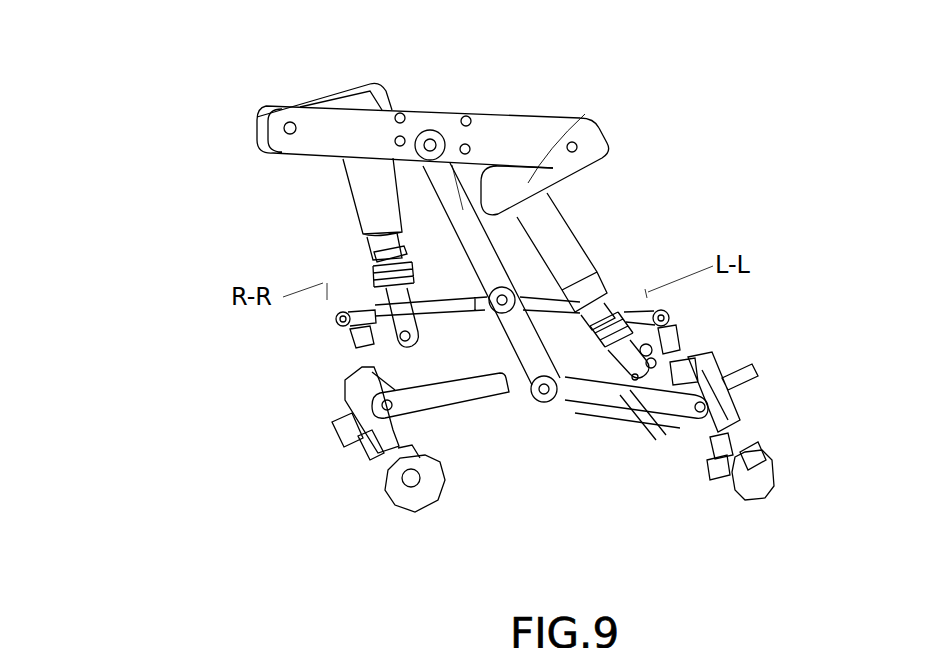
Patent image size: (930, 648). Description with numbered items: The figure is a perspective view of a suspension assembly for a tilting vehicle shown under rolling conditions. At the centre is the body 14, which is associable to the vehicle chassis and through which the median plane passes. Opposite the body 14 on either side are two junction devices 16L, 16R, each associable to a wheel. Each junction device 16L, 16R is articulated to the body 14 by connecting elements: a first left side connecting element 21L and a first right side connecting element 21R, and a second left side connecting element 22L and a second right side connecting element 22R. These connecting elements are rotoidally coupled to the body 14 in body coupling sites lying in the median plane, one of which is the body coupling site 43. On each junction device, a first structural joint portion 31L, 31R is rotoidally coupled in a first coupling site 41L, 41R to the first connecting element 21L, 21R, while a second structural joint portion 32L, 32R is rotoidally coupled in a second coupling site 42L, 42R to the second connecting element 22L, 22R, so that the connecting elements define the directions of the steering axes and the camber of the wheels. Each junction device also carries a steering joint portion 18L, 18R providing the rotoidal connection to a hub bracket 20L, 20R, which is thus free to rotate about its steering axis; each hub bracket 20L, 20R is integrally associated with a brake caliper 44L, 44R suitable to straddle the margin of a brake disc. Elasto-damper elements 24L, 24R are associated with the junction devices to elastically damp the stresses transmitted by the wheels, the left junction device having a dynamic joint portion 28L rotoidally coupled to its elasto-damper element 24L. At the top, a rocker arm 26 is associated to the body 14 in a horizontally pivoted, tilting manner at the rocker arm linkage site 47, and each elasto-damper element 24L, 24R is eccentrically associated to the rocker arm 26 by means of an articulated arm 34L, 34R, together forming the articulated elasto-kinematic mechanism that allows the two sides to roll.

The body 14 is at (510, 118).
The rocker arm 26 is at (420, 130).
The rocker arm linkage site 47 is at (433, 128).
The articulated arm 34R is at (360, 91).
The articulated arm 34L is at (572, 118).
The elasto-damper element 24R is at (367, 182).
The elasto-damper element 24L is at (542, 215).
The second right side connecting element 22R is at (342, 292).
The second left side connecting element 22L is at (630, 317).
The second coupling site 42R is at (338, 324).
The second coupling site 42L is at (668, 318).
The second structural joint portion 32R is at (348, 335).
The second structural joint portion 32L is at (672, 332).
The hub bracket 20R is at (350, 400).
The hub bracket 20L is at (715, 368).
The steering joint portion 18R is at (262, 445).
The steering joint portion 18L is at (785, 435).
The first structural joint portion 31R is at (337, 440).
The first structural joint portion 31L is at (757, 433).
The first coupling site 41R is at (363, 443).
The first coupling site 41L is at (709, 487).
The brake caliper 44R is at (403, 513).
The brake caliper 44L is at (754, 503).
The junction device 16R is at (303, 472).
The junction device 16L is at (763, 475).
The first right side connecting element 21R is at (473, 408).
The first left side connecting element 21L is at (590, 402).
The body coupling site 43 is at (547, 403).
The dynamic joint portion 28L is at (640, 425).